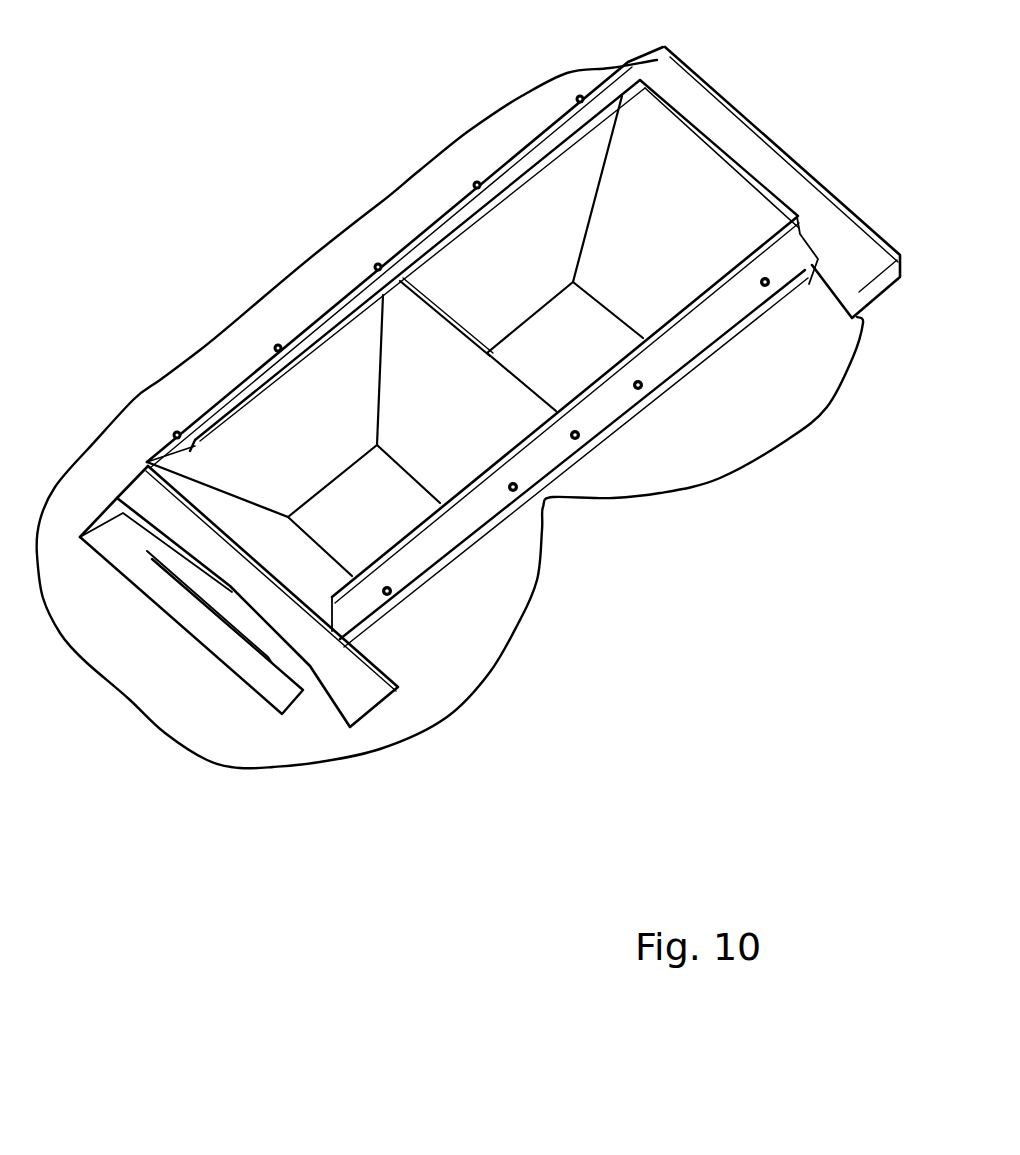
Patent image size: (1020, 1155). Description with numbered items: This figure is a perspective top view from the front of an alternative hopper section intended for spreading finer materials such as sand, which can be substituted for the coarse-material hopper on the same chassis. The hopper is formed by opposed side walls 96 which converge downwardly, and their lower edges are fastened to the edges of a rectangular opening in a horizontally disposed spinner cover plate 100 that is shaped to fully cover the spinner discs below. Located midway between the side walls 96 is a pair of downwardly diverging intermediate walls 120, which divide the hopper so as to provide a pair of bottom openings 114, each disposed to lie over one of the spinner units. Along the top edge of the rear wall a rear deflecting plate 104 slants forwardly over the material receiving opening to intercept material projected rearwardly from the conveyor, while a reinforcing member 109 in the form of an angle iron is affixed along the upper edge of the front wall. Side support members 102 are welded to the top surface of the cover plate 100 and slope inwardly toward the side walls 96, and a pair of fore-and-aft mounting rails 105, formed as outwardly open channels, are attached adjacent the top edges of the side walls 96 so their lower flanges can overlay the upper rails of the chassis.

The spinner cover plate 100 is at (458, 655).
The side wall 96 is at (272, 548).
The rear deflecting plate 104 is at (365, 288).
The mounting rail 105 is at (818, 212).
The reinforcing member 109 is at (693, 342).
The bottom opening 114 is at (397, 514).
The intermediate wall 120 is at (467, 427).
The side support member 102 is at (262, 678).